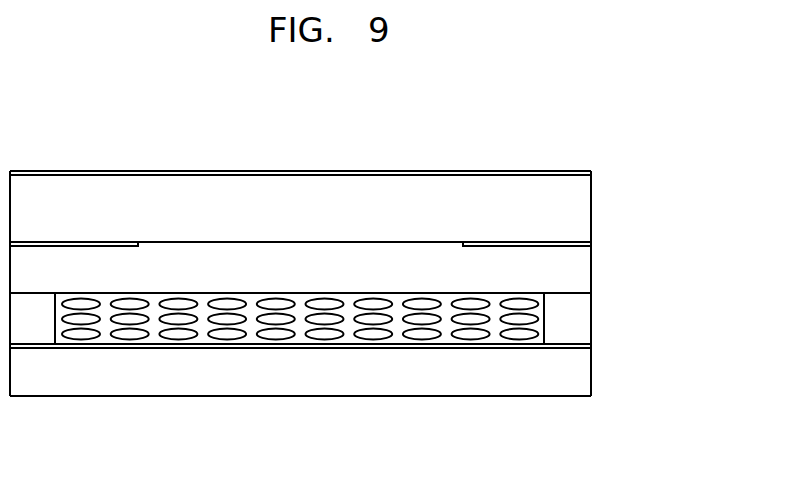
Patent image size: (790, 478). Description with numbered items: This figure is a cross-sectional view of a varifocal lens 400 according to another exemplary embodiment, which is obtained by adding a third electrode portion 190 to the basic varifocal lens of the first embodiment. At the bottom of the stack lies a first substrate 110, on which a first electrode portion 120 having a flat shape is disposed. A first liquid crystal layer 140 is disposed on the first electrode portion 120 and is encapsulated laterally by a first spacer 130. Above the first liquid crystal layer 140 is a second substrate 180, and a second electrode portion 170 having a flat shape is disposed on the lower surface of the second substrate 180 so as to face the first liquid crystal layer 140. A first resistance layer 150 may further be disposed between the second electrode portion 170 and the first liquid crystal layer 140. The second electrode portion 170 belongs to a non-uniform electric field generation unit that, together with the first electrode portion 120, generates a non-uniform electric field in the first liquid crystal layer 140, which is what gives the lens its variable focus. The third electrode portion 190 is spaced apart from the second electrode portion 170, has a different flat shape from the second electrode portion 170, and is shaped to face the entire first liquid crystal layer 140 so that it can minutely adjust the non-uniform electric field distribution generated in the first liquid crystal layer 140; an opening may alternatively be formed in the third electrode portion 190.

The varifocal lens 400 is at (606, 158).
The third electrode portion 190 is at (592, 174).
The second substrate 180 is at (592, 210).
The second electrode portion 170 is at (592, 245).
The first resistance layer 150 is at (592, 270).
The first spacer 130 is at (592, 320).
The first electrode portion 120 is at (592, 346).
The first substrate 110 is at (592, 372).
The first liquid crystal layer 140 is at (495, 340).